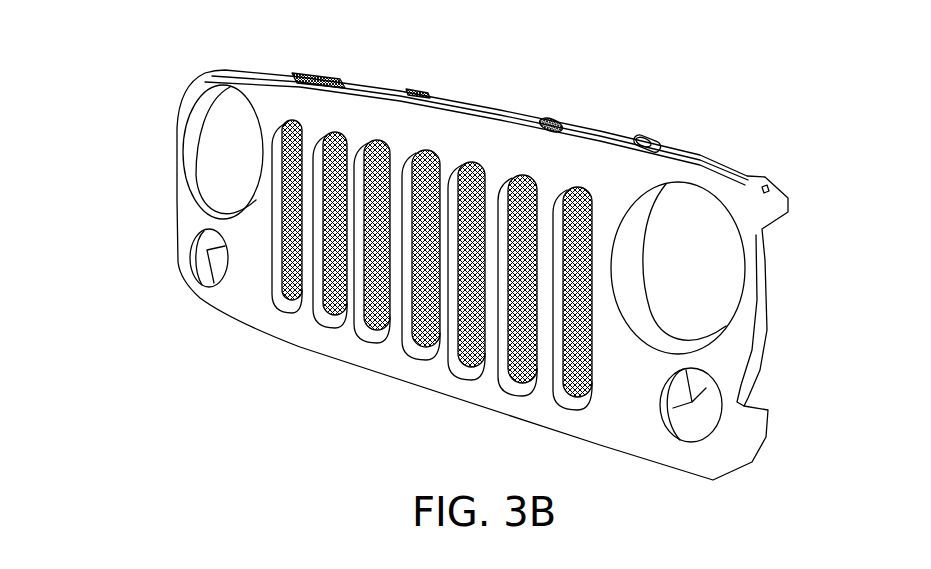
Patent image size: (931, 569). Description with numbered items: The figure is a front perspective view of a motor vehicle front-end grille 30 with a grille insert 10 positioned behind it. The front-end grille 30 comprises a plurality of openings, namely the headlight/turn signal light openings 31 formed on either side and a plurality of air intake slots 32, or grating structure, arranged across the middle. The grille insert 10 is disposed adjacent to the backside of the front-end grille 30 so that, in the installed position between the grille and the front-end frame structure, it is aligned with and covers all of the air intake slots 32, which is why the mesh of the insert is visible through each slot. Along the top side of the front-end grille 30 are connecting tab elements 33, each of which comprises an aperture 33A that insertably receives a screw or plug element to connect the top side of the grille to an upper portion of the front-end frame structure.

The grille insert 10 is at (426, 312).
The front-end grille 30 is at (208, 72).
The headlight/turn signal light openings 31 is at (221, 147).
The air intake slots 32 is at (330, 305).
The connecting tab elements 33 is at (313, 70).
The aperture 33A is at (418, 89).